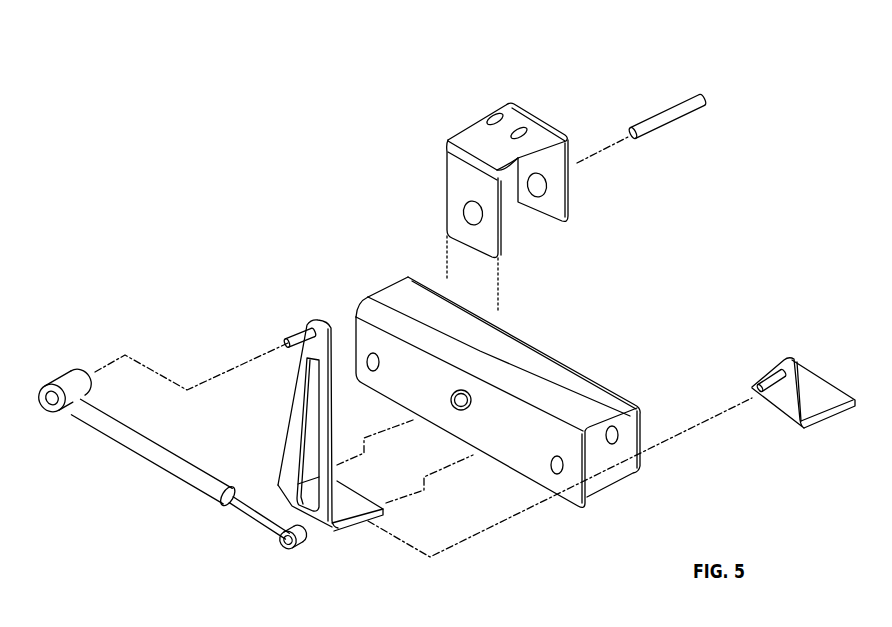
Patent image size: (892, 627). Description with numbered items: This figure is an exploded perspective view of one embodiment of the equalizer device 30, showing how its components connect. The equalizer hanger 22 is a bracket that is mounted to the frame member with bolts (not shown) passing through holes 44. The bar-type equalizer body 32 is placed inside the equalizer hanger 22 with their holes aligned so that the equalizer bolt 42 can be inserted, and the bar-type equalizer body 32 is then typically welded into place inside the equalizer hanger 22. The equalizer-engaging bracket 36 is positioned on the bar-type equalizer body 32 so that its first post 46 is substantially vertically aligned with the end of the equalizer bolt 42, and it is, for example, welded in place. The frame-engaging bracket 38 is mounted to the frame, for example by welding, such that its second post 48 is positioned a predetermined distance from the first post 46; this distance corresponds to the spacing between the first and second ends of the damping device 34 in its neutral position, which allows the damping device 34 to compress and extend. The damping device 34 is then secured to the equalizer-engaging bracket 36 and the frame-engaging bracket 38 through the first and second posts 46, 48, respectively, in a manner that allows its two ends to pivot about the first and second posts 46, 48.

The equalizer device 30 is at (177, 192).
The equalizer hanger 22 is at (450, 157).
The holes 44 is at (512, 133).
The equalizer bolt 42 is at (660, 124).
The bar-type equalizer body 32 is at (545, 488).
The damping device 34 is at (148, 443).
The first post 46 is at (290, 341).
The equalizer-engaging bracket 36 is at (341, 518).
The frame-engaging bracket 38 is at (776, 366).
The second post 48 is at (758, 388).